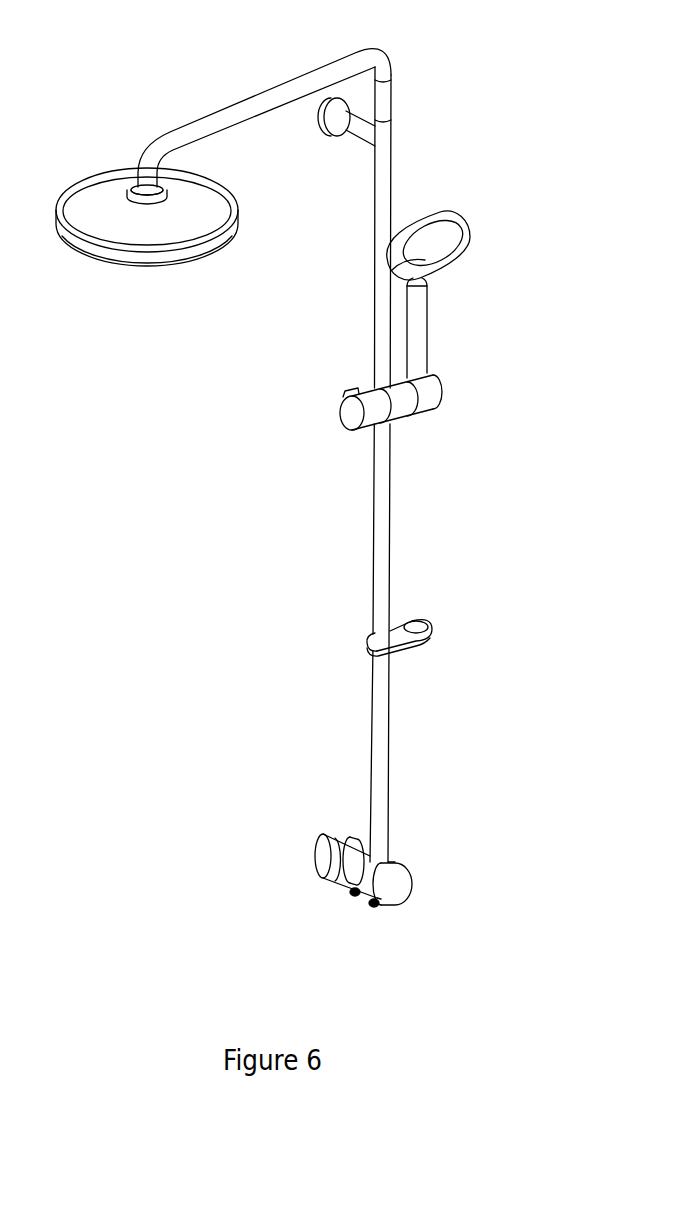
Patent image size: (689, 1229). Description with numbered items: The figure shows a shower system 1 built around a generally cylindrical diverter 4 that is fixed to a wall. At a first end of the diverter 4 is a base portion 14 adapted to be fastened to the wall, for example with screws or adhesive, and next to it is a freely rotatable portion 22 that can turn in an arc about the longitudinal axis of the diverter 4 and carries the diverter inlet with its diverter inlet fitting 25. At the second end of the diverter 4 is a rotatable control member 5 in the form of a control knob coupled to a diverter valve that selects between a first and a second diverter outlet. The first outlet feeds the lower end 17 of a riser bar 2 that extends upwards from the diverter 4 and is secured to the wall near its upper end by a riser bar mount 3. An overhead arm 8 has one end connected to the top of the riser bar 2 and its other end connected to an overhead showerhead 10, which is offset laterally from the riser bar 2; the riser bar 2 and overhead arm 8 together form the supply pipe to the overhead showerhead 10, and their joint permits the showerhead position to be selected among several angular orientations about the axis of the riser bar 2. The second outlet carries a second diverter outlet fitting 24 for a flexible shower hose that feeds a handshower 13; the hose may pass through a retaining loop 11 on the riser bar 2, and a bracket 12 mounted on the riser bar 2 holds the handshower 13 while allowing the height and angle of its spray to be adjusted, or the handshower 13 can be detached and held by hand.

The shower system 1 is at (442, 120).
The riser bar 2 is at (378, 305).
The riser bar mount 3 is at (321, 122).
The diverter 4 is at (342, 873).
The control member 5 is at (403, 892).
The overhead arm 8 is at (248, 104).
The overhead showerhead 10 is at (90, 248).
The retaining loop 11 is at (428, 630).
The bracket 12 is at (350, 413).
The handshower 13 is at (467, 237).
The base portion 14 is at (330, 847).
The lower end of riser bar 17 is at (390, 858).
The freely rotatable portion 22 is at (360, 850).
The second diverter outlet fitting 24 is at (377, 907).
The diverter inlet fitting 25 is at (357, 897).